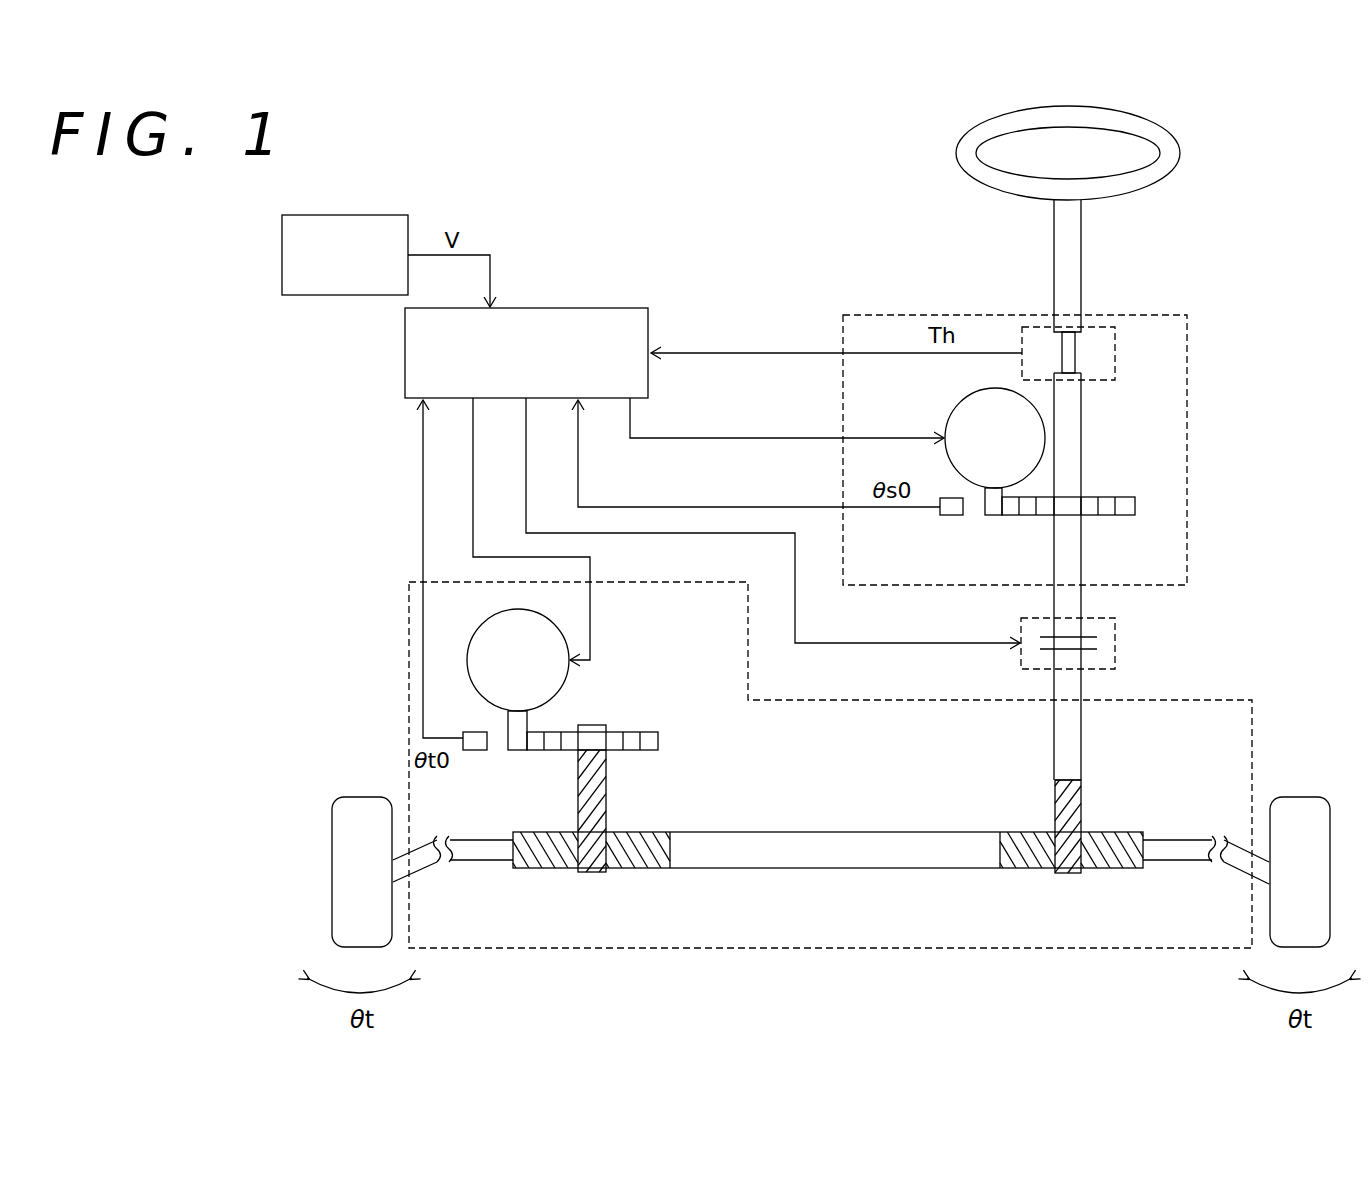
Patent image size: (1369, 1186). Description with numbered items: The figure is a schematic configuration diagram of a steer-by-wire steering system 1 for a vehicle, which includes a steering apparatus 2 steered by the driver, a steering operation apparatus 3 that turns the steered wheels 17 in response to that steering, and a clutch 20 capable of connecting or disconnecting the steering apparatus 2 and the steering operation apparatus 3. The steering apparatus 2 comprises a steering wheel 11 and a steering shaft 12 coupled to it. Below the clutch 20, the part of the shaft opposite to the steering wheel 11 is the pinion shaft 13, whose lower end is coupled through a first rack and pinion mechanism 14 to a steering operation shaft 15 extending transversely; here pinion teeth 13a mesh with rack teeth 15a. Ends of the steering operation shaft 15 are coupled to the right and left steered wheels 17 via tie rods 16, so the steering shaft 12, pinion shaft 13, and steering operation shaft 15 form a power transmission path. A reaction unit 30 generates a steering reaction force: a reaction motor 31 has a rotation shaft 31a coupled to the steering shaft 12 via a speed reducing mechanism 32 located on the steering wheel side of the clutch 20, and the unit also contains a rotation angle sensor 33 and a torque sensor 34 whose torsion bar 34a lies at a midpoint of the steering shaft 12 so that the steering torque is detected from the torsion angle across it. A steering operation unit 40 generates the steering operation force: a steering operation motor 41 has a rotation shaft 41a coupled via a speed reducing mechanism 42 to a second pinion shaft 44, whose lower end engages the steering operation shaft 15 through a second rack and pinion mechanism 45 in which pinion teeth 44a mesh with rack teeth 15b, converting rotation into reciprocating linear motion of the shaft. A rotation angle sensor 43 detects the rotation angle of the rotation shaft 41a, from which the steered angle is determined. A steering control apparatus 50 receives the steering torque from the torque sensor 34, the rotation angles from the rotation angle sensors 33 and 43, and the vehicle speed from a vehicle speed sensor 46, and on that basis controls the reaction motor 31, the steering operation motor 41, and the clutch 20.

The steering system 1 is at (1310, 186).
The steering apparatus 2 is at (992, 278).
The steering operation apparatus 3 is at (1200, 657).
The steering wheel 11 is at (1180, 150).
The steering shaft 12 is at (1083, 405).
The pinion shaft 13 is at (1083, 735).
The pinion teeth 13a is at (1063, 792).
The first rack and pinion mechanism 14 is at (1059, 886).
The steering operation shaft 15 is at (905, 870).
The rack teeth 15a is at (1112, 870).
The rack teeth 15b is at (672, 870).
The tie rod 16 is at (484, 862).
The steered wheel 17 is at (362, 797).
The clutch 20 is at (1117, 640).
The reaction unit 30 is at (1188, 325).
The reaction motor 31 is at (950, 414).
The rotation shaft 31a is at (994, 516).
The speed reducing mechanism 32 is at (1113, 497).
The rotation angle sensor 33 is at (951, 516).
The torque sensor 34 is at (1116, 355).
The torsion bar 34a is at (1076, 350).
The steering operation unit 40 is at (1212, 700).
The steering operation motor 41 is at (516, 613).
The rotation shaft 41a is at (515, 751).
The speed reducing mechanism 42 is at (660, 742).
The rotation angle sensor 43 is at (476, 751).
The pinion shaft 44 is at (578, 776).
The pinion teeth 44a is at (598, 792).
The second rack and pinion mechanism 45 is at (596, 886).
The vehicle speed sensor 46 is at (346, 215).
The steering control apparatus 50 is at (525, 306).